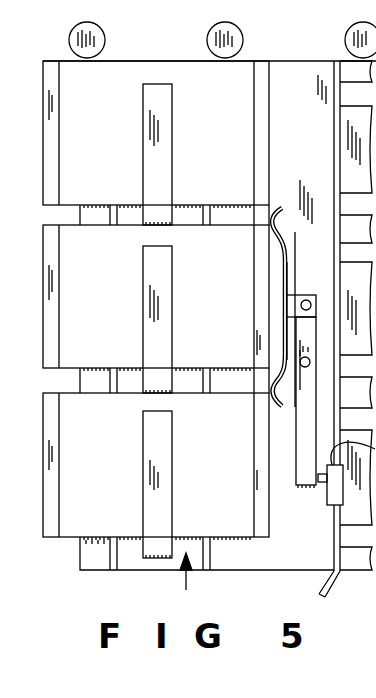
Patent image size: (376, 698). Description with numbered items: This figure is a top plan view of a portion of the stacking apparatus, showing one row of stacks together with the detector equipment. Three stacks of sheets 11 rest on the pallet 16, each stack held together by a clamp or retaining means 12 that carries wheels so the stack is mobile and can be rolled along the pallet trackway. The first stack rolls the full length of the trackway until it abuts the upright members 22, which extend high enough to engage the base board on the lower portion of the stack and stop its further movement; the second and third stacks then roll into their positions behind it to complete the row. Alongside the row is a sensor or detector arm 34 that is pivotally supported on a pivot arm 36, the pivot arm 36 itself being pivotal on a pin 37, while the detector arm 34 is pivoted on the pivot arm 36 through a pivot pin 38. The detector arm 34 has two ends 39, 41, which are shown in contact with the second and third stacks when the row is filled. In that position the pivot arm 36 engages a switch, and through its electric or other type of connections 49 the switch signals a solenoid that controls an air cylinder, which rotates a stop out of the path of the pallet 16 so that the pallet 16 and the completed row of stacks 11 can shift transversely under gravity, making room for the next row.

The stack of sheets 11 is at (243, 137).
The clamp or retaining means 12 is at (150, 208).
The pallet 16 is at (98, 561).
The upright members 22 is at (355, 340).
The sensor or detector arm 34 is at (295, 258).
The pivot arm 36 is at (300, 384).
The pin 37 is at (305, 368).
The pivot pin 38 is at (306, 300).
The end of detector arm 39 is at (270, 237).
The end of detector arm 41 is at (268, 402).
The electric or other type of connections 49 is at (325, 596).